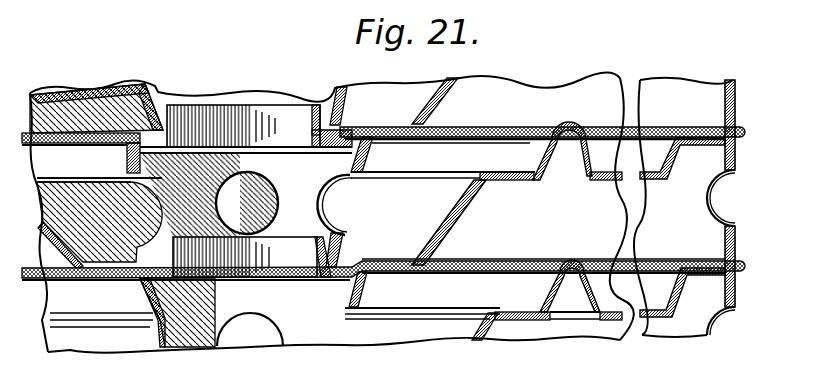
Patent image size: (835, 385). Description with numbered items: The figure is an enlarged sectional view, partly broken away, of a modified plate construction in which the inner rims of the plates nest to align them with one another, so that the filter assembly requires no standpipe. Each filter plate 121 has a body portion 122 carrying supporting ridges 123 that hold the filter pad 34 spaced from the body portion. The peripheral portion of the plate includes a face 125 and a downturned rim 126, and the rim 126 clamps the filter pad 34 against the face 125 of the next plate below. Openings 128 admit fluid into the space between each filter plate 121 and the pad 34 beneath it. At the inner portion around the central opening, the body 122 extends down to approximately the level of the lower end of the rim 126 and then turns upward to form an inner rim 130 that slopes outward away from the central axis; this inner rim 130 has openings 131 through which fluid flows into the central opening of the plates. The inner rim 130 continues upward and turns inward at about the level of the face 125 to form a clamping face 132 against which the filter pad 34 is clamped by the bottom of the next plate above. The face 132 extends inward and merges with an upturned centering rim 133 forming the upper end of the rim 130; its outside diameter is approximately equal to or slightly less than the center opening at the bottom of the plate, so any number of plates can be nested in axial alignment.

The filter pad 34 is at (88, 140).
The filter plate 121 is at (739, 95).
The body portion 122 is at (513, 173).
The supporting ridge 123 is at (537, 135).
The face 125 is at (713, 125).
The downturned rim 126 is at (737, 240).
The opening 128 is at (717, 200).
The inner rim 130 is at (369, 158).
The opening 131 is at (338, 202).
The clamping face 132 is at (347, 125).
The centering rim 133 is at (313, 115).